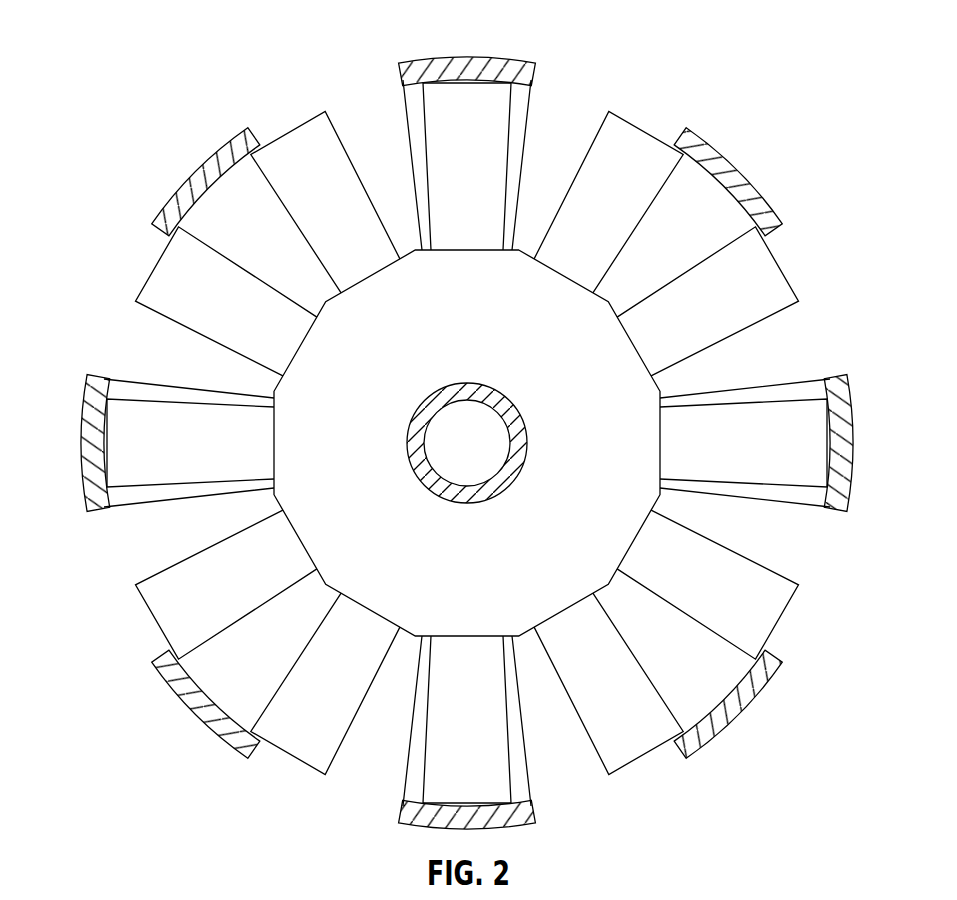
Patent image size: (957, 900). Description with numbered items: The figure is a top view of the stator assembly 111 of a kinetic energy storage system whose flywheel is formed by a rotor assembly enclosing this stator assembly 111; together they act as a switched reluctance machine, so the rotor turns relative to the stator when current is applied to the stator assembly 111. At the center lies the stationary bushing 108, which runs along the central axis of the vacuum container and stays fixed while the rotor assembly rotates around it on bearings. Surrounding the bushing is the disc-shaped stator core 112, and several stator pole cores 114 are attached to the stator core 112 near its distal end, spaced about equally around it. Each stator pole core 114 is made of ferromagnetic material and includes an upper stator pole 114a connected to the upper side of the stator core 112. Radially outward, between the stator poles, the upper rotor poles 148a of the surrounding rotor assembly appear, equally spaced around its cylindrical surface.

The stator assembly 111 is at (160, 48).
The stator core 112 is at (613, 412).
The stationary bushing 108 is at (503, 482).
The stator pole core 114 is at (391, 98).
The upper stator pole 114a is at (470, 127).
The upper rotor pole 148a is at (737, 178).